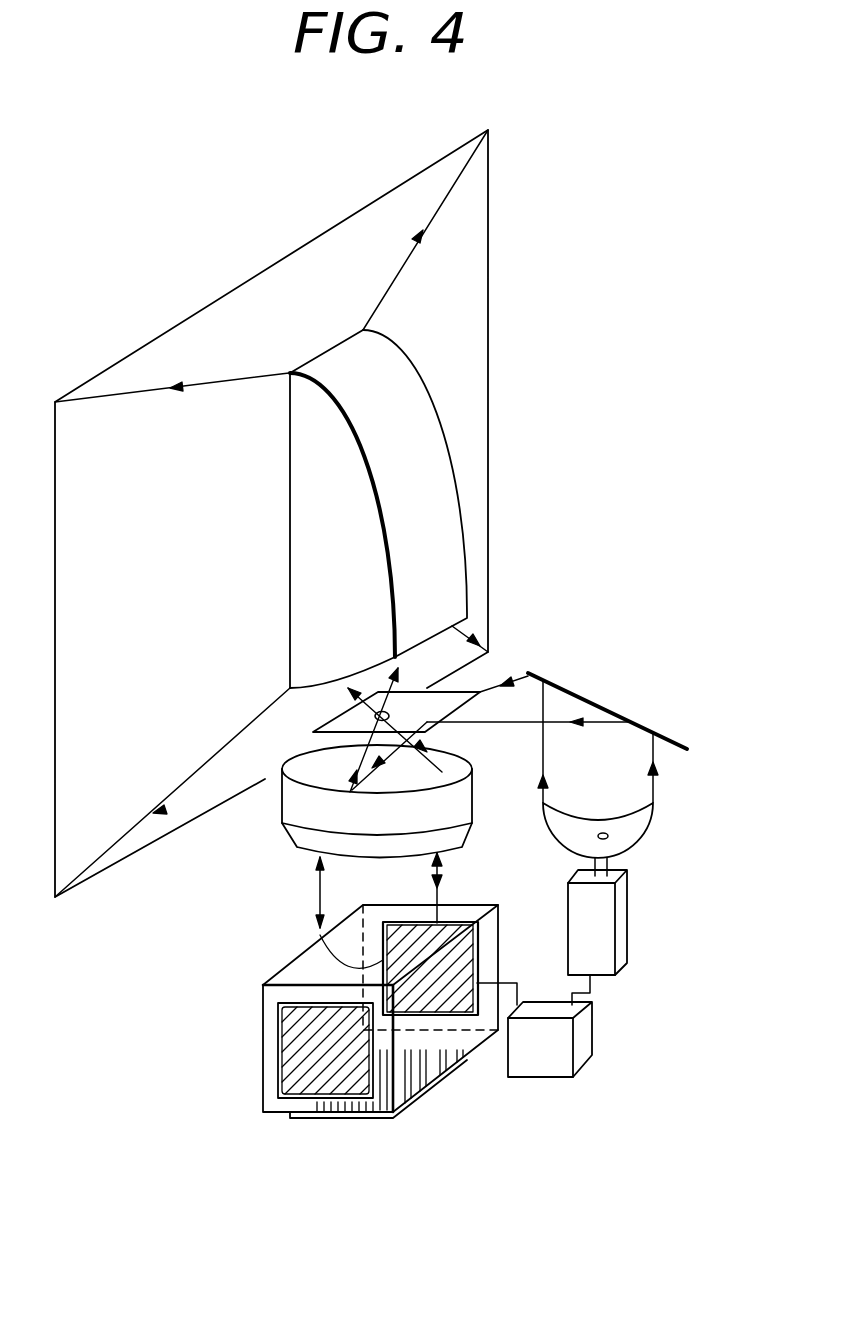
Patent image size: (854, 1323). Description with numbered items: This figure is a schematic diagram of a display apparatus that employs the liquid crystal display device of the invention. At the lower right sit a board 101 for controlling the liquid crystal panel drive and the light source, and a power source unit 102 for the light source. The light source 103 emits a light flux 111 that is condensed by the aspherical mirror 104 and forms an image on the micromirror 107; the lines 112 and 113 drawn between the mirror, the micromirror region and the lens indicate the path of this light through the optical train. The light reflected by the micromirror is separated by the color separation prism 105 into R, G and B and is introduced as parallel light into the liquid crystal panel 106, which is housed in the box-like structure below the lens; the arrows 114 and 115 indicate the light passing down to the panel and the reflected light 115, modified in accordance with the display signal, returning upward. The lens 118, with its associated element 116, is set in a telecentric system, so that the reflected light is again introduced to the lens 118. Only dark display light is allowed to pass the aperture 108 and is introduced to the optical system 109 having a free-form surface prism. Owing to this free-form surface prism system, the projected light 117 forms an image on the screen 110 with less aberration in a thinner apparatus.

The board 101 is at (582, 1038).
The power source unit 102 is at (618, 937).
The light source 103 is at (640, 830).
The aspherical mirror 104 is at (630, 718).
The color separation prism 105 is at (273, 983).
The liquid crystal panel 106 is at (420, 1007).
The micromirror 107 is at (440, 700).
The aperture 108 is at (453, 692).
The optical system having a free-form surface prism 109 is at (442, 563).
The screen 110 is at (490, 313).
The light flux 111 is at (655, 777).
The reflected light beam 112 is at (520, 720).
The light beam 113 is at (445, 756).
The light beam 114 is at (443, 860).
The reflected light 115 is at (317, 872).
The condenser lens 116 is at (350, 782).
The projected light 117 is at (190, 375).
The lens 118 is at (282, 813).